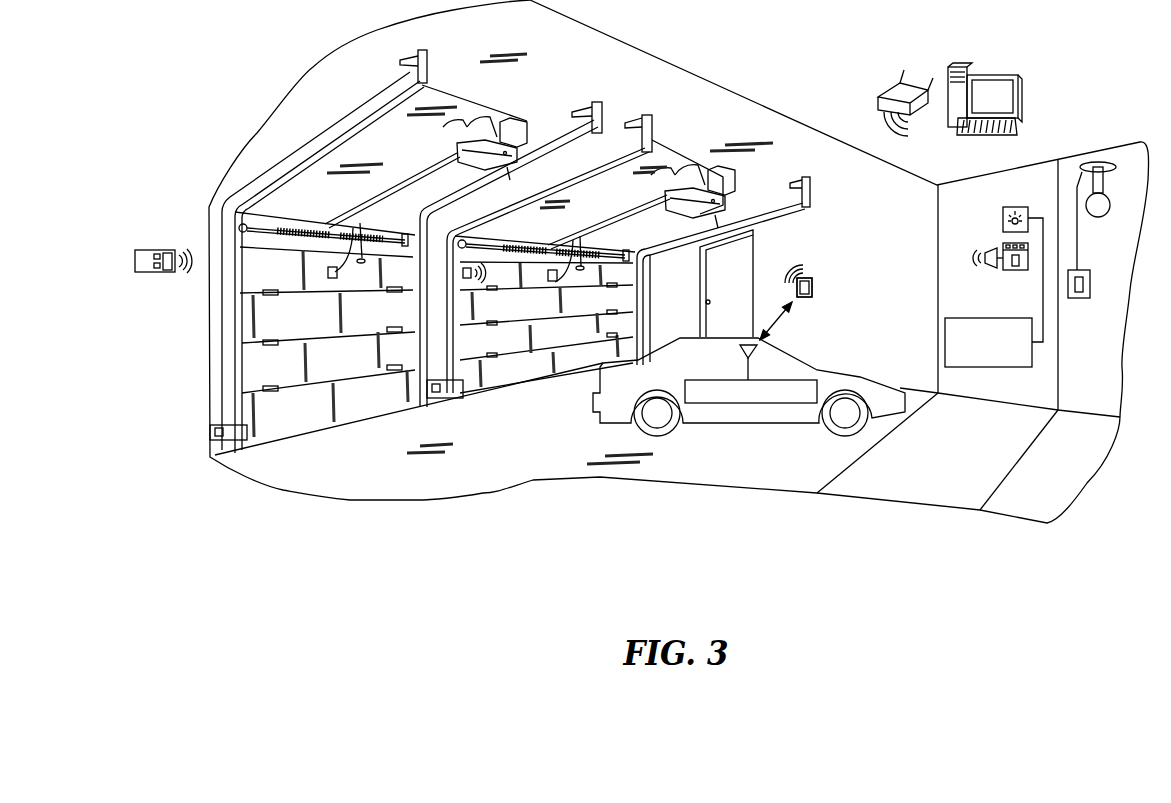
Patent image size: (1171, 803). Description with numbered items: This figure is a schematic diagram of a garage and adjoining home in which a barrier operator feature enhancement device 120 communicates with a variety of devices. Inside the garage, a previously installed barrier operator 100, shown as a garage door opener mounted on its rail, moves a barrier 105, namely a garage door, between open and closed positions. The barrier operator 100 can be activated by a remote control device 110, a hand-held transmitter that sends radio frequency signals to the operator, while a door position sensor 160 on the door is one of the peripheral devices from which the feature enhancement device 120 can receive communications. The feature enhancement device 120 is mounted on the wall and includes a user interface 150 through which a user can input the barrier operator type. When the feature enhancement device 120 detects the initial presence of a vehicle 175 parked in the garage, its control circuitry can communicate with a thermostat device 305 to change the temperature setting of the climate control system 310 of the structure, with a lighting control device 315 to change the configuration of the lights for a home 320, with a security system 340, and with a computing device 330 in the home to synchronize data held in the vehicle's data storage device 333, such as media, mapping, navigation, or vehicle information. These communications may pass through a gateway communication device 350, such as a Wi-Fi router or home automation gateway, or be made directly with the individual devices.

The barrier operator 100 is at (676, 197).
The barrier 105 is at (571, 341).
The remote control device 110 is at (142, 250).
The barrier operator feature enhancement device 120 is at (810, 275).
The user interface 150 is at (812, 295).
The door position sensor 160 is at (470, 268).
The vehicle 175 is at (749, 394).
The thermostat device 305 is at (1012, 207).
The climate control system 310 is at (1012, 367).
The lighting control device 315 is at (1070, 300).
The lights for a home 320 is at (1092, 217).
The computing device 330 is at (965, 65).
The data storage device 333 is at (737, 403).
The security system 340 is at (1015, 271).
The gateway communication device 350 is at (890, 86).